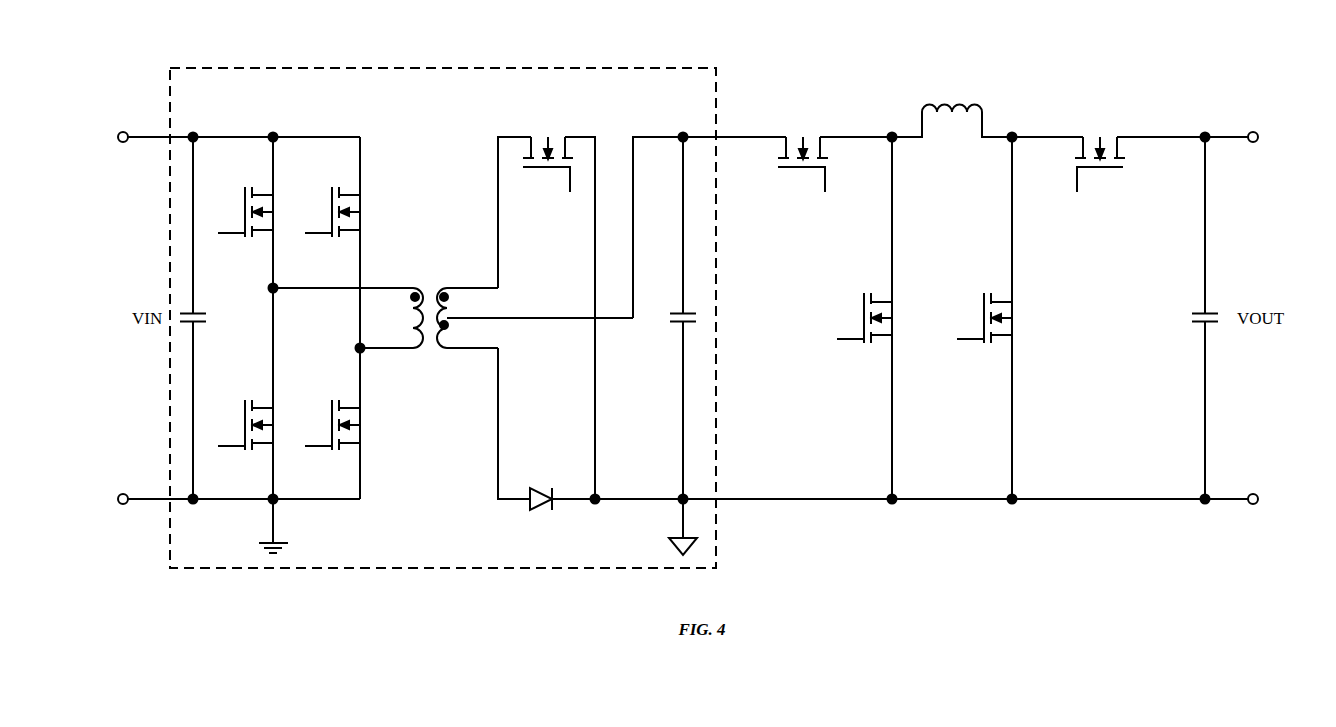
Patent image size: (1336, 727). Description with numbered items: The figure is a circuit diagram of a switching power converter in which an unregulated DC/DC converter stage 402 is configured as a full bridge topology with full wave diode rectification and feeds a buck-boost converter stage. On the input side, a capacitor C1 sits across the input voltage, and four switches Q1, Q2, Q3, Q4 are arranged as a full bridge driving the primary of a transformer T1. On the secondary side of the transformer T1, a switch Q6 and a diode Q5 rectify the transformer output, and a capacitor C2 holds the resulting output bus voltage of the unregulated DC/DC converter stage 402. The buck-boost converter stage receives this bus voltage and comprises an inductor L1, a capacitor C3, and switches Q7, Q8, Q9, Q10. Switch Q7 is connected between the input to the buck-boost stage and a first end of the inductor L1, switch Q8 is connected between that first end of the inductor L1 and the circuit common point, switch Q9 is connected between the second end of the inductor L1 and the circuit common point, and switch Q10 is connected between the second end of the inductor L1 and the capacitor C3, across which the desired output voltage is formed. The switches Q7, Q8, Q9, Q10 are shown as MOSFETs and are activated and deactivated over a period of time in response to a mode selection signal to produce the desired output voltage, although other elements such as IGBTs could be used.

The unregulated DC/DC converter stage 402 is at (646, 53).
The switch Q1 is at (243, 212).
The switch Q2 is at (243, 425).
The switch Q3 is at (330, 212).
The switch Q4 is at (330, 425).
The diode Q5 is at (541, 486).
The switch Q6 is at (548, 165).
The switch Q7 is at (803, 165).
The switch Q8 is at (862, 318).
The switch Q9 is at (982, 318).
The switch Q10 is at (1100, 165).
The capacitor C1 is at (205, 318).
The capacitor C2 is at (672, 318).
The capacitor C3 is at (1193, 318).
The transformer T1 is at (453, 304).
The inductor L1 is at (952, 111).